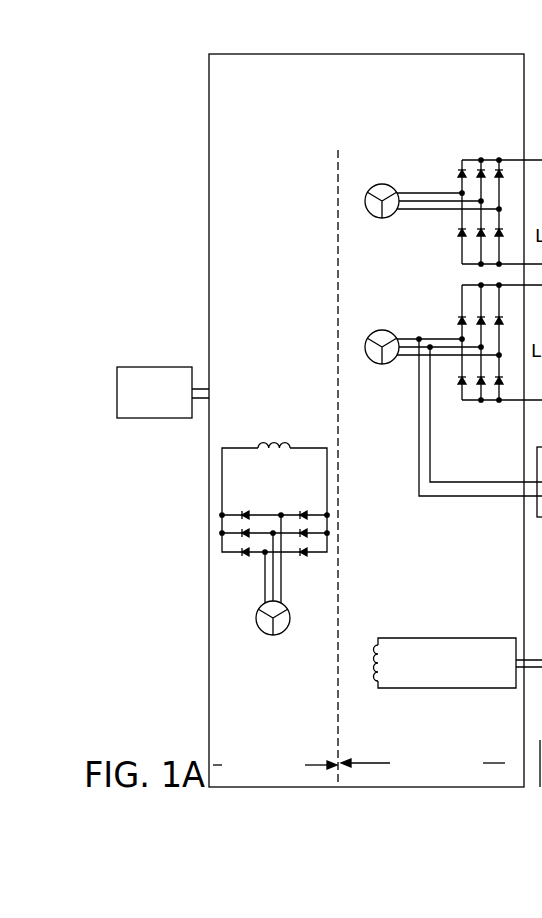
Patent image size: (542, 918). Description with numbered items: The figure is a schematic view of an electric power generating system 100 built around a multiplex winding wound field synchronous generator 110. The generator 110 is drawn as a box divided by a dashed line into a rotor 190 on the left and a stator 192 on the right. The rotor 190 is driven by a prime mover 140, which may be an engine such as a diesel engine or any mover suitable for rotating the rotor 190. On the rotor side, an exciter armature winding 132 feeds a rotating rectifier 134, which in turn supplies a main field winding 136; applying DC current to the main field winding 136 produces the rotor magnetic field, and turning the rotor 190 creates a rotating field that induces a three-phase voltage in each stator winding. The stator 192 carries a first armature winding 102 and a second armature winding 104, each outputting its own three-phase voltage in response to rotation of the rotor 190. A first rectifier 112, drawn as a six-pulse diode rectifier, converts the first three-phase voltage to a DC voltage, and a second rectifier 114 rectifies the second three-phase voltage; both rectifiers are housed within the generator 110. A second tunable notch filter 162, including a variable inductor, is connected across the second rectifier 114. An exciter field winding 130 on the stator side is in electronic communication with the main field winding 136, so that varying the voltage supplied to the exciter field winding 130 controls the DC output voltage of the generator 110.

The electric power generating system 100 is at (536, 166).
The first armature winding 102 is at (341, 201).
The second armature winding 104 is at (341, 347).
The synchronous generator 110 is at (209, 97).
The first rectifier 112 is at (447, 221).
The second rectifier 114 is at (445, 315).
The exciter field winding 130 is at (448, 690).
The exciter armature winding 132 is at (235, 618).
The rotating rectifier 134 is at (196, 525).
The main field winding 136 is at (222, 440).
The prime mover 140 is at (170, 366).
The second tunable notch filter 162 is at (531, 379).
The rotor 190 is at (293, 314).
The stator 192 is at (448, 565).